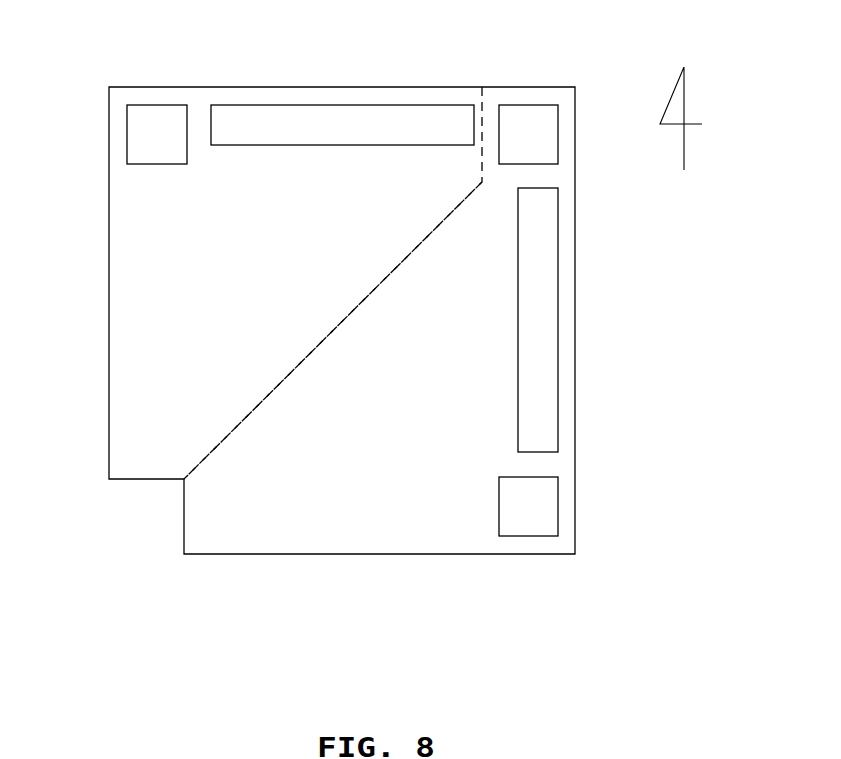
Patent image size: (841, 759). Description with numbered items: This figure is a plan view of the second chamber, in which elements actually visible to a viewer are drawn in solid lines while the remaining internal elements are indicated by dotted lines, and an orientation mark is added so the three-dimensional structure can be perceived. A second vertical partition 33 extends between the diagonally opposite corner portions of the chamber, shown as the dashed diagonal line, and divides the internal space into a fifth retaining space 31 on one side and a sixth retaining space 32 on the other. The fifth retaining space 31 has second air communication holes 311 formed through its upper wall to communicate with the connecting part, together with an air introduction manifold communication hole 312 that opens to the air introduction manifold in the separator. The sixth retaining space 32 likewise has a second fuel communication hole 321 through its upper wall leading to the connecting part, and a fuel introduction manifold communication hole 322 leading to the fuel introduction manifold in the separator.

The fifth retaining space 31 is at (342, 320).
The sixth retaining space 32 is at (332, 283).
The second vertical partition 33 is at (233, 428).
The second air communication holes 311 is at (527, 105).
The air introduction manifold communication hole 312 is at (545, 323).
The second fuel communication hole 321 is at (152, 105).
The fuel introduction manifold communication hole 322 is at (329, 115).